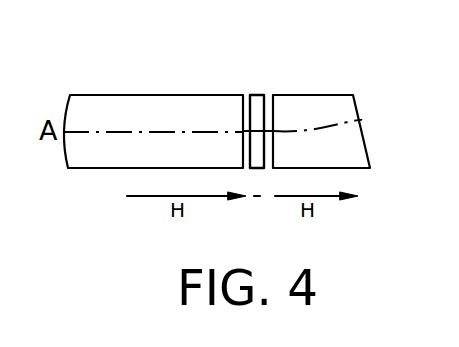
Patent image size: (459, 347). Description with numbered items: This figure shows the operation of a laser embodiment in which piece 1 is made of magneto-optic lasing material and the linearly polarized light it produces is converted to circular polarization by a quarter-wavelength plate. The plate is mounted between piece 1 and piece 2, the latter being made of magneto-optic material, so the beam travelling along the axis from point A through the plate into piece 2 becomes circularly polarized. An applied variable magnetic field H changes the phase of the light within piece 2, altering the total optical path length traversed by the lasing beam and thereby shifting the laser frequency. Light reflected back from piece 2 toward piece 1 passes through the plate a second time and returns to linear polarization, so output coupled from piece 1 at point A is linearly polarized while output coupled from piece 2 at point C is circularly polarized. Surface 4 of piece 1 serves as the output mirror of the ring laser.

The piece 1 is at (188, 93).
The piece 2 is at (325, 93).
The surface 4 is at (260, 93).